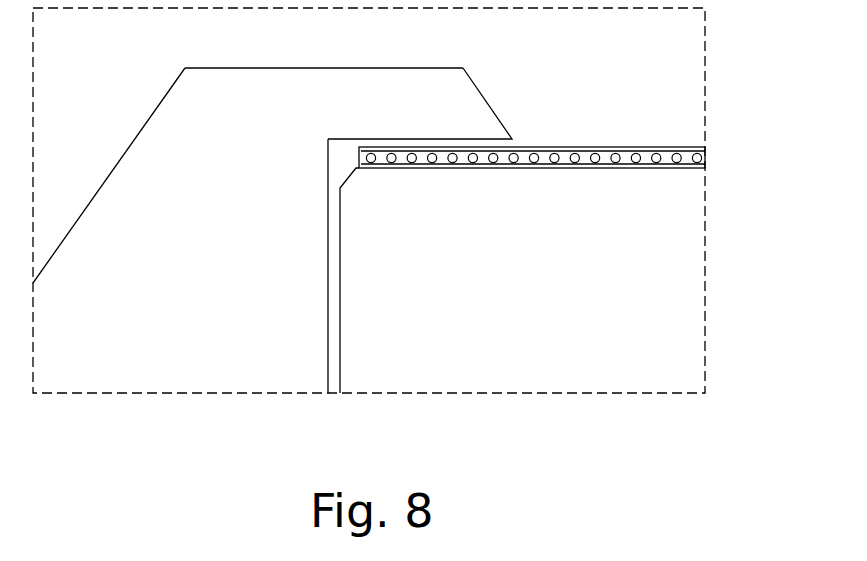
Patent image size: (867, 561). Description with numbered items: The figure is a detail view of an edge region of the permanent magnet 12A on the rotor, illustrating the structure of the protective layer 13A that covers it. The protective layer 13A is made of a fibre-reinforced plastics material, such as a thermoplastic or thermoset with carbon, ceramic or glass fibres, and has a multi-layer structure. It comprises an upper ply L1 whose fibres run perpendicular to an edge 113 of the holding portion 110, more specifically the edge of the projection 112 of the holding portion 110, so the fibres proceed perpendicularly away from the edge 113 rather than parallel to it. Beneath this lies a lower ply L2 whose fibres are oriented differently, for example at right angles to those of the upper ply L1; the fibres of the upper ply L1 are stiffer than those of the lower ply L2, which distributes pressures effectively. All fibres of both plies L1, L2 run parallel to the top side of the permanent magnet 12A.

The holding portion 110 is at (176, 133).
The projection 112 is at (257, 100).
The edge 113 is at (512, 138).
The permanent magnet 12A is at (497, 365).
The protective layer 13A is at (611, 140).
The upper ply L1 is at (714, 144).
The lower ply L2 is at (714, 164).